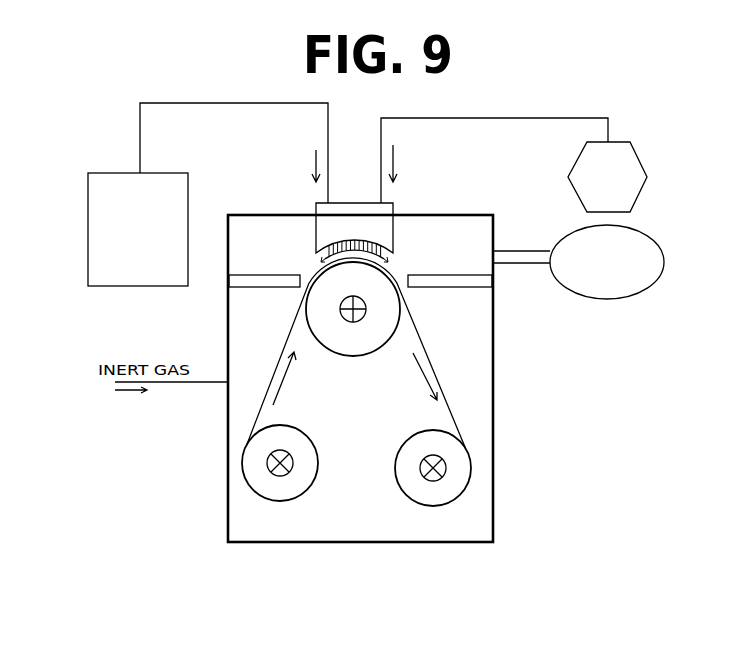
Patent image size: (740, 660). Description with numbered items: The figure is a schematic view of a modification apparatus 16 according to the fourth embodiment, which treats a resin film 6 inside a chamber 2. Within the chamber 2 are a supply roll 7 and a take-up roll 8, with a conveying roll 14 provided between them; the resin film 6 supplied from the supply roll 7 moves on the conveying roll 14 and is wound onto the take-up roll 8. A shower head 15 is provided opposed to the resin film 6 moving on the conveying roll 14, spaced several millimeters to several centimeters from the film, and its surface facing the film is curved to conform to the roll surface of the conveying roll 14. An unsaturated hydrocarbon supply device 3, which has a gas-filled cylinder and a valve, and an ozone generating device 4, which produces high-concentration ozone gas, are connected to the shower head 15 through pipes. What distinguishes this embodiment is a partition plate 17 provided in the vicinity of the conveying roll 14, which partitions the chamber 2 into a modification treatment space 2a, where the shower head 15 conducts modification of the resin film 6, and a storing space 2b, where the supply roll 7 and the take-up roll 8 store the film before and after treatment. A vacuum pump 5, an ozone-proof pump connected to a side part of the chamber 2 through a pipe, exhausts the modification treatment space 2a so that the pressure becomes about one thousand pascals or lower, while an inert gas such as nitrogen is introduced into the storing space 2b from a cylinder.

The chamber 2 is at (493, 473).
The modification treatment space 2a is at (258, 237).
The storing space 2b is at (242, 517).
The unsaturated hydrocarbon supply device 3 is at (642, 192).
The ozone generating device 4 is at (105, 287).
The vacuum pump 5 is at (637, 295).
The resin film 6 is at (270, 382).
The supply roll 7 is at (295, 488).
The take-up roll 8 is at (420, 495).
The conveying roll 14 is at (365, 347).
The shower head 15 is at (393, 233).
The modification apparatus 16 is at (544, 533).
The partition plate 17 is at (248, 287).